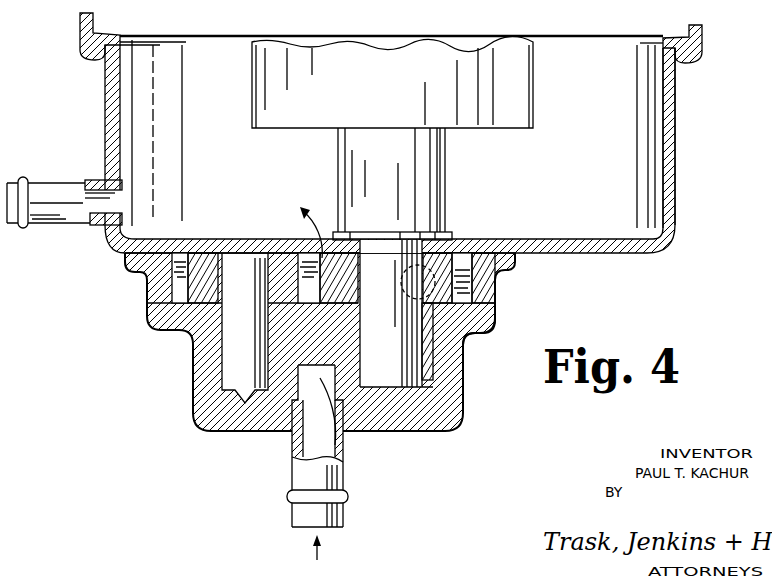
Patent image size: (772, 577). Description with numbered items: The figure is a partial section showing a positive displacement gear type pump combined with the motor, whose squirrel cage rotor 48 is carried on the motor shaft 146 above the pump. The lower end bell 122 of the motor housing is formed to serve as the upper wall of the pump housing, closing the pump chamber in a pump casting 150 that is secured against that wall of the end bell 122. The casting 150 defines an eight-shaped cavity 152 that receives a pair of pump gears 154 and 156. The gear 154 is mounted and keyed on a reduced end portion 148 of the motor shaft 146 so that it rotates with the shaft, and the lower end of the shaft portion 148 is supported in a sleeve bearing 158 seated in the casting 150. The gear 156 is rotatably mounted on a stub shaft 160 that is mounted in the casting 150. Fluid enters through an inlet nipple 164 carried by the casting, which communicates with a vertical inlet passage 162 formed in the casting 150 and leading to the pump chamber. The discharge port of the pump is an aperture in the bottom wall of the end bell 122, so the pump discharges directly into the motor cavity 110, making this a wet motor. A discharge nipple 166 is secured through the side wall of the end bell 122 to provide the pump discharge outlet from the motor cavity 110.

The squirrel cage rotor 48 is at (397, 93).
The motor cavity 110 is at (230, 153).
The lower end bell 122 is at (673, 157).
The motor shaft 146 is at (358, 173).
The reduced end portion of the motor shaft 148 is at (398, 355).
The pump casting 150 is at (437, 402).
The 8-shaped cavity 152 is at (484, 331).
The pump gear 154 is at (442, 266).
The pump gear 156 is at (207, 265).
The sleeve bearing 158 is at (430, 343).
The stub shaft 160 is at (255, 360).
The vertical inlet passage 162 is at (343, 445).
The inlet nipple 164 is at (323, 510).
The discharge nipple 166 is at (57, 210).